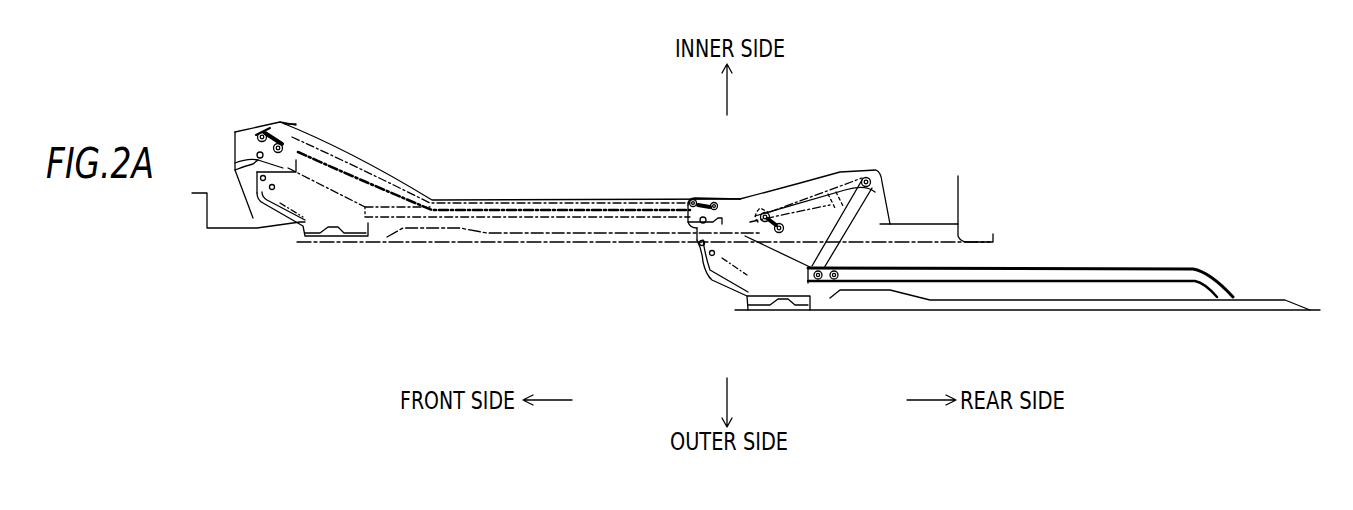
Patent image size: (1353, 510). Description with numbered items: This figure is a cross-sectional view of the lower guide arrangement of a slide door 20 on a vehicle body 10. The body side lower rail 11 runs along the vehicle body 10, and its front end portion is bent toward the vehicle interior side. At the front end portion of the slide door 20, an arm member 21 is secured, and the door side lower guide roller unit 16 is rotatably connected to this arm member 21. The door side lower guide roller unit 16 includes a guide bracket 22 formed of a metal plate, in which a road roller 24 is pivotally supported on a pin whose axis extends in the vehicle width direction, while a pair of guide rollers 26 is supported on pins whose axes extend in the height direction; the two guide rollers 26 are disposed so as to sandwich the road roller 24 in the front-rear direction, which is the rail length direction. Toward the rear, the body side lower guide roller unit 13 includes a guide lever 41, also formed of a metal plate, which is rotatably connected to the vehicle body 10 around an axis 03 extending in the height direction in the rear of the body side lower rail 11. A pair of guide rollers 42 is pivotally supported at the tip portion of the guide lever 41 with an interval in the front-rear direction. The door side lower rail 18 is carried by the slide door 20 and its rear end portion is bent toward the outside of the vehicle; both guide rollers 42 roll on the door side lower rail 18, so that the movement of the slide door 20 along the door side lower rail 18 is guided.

The vehicle body 10 is at (226, 232).
The body side lower rail 11 is at (360, 185).
The body side lower guide roller unit 13 is at (825, 172).
The door side lower guide roller unit 16 is at (235, 157).
The door side lower rail 18 is at (385, 236).
The slide door 20 is at (438, 244).
The arm member 21 is at (237, 170).
The guide bracket 22 is at (233, 133).
The road roller 24 is at (265, 128).
The guide roller 26 is at (260, 124).
The guide lever 41 is at (842, 248).
The guide roller 42 is at (772, 210).
The axis O3 03 is at (864, 176).